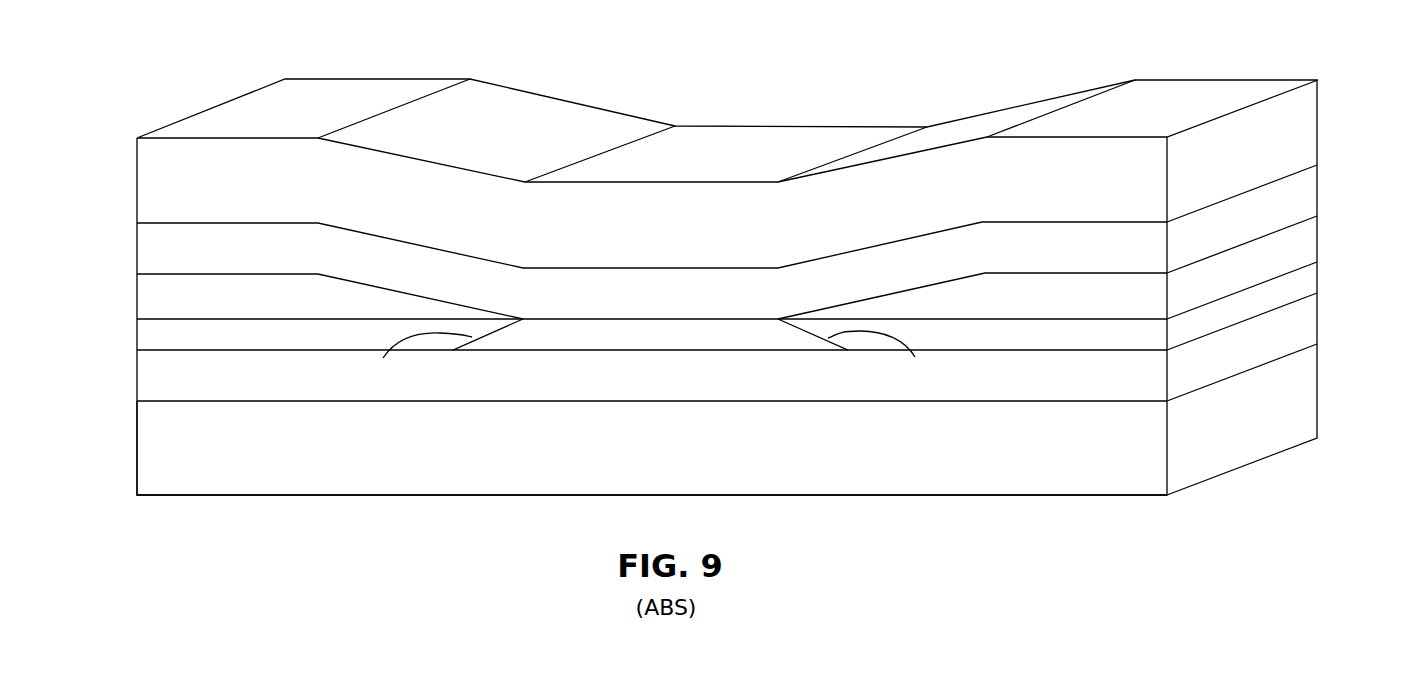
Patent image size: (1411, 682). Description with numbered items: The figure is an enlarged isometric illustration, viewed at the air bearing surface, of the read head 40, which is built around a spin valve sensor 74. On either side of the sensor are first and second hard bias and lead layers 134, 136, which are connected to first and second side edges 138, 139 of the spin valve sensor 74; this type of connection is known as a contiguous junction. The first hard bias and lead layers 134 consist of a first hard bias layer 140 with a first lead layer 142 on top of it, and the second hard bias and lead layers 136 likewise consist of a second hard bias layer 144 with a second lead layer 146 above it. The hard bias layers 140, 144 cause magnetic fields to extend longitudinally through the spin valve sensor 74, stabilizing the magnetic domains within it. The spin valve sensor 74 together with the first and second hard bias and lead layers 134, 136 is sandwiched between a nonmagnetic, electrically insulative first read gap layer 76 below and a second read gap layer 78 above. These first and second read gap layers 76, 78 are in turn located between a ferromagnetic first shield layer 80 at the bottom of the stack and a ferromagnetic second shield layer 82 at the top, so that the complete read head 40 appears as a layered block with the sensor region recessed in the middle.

The read head 40 is at (827, 78).
The second shield layer 82 is at (578, 113).
The second read gap layer 78 is at (383, 253).
The spin valve sensor 74 is at (561, 318).
The first read gap layer 76 is at (532, 392).
The first shield layer 80 is at (310, 475).
The first hard bias and lead layers 134 is at (294, 313).
The second hard bias and lead layers 136 is at (1084, 304).
The first side edge 138 is at (416, 362).
The second side edge 139 is at (884, 360).
The first hard bias layer 140 is at (180, 337).
The first lead layer 142 is at (180, 285).
The second hard bias layer 144 is at (1115, 335).
The second lead layer 146 is at (1113, 285).